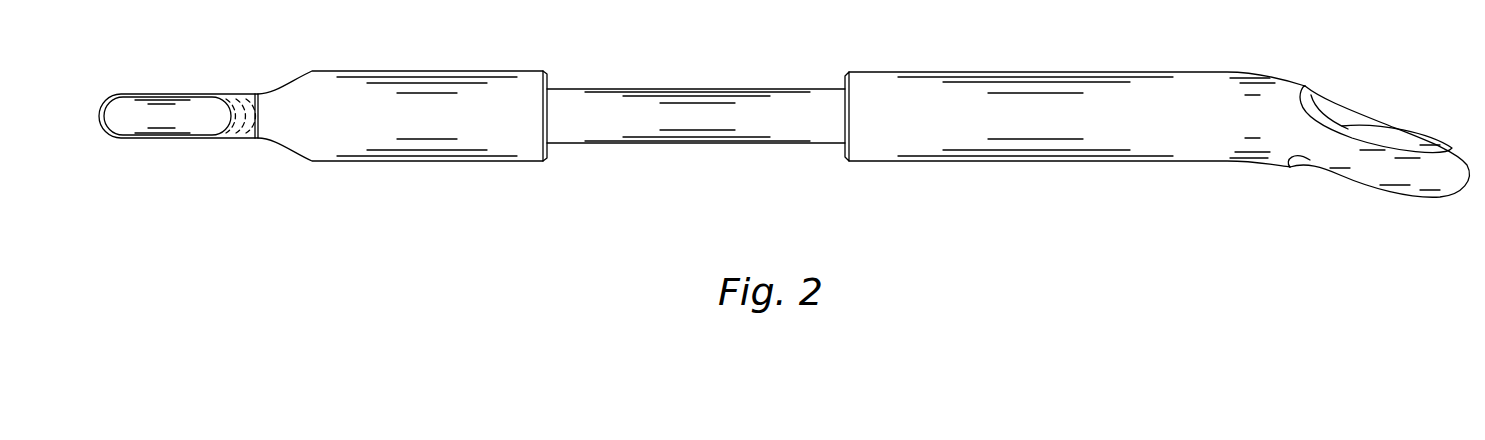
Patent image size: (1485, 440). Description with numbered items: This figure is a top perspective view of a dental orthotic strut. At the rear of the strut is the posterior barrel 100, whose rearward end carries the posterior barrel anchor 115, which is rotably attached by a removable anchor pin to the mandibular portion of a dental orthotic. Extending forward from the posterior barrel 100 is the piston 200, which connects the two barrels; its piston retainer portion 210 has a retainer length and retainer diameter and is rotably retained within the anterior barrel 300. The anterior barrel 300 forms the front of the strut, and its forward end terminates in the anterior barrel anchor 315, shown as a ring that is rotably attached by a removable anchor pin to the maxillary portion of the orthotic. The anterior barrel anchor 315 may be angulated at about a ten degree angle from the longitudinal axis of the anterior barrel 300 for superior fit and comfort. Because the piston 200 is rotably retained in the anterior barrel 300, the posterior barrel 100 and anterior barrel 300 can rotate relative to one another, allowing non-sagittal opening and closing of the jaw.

The posterior barrel anchor 115 is at (185, 150).
The posterior barrel 100 is at (407, 168).
The piston 200 is at (697, 82).
The piston retainer portion 210 is at (705, 150).
The anterior barrel 300 is at (990, 165).
The anterior barrel anchor 315 is at (1385, 107).